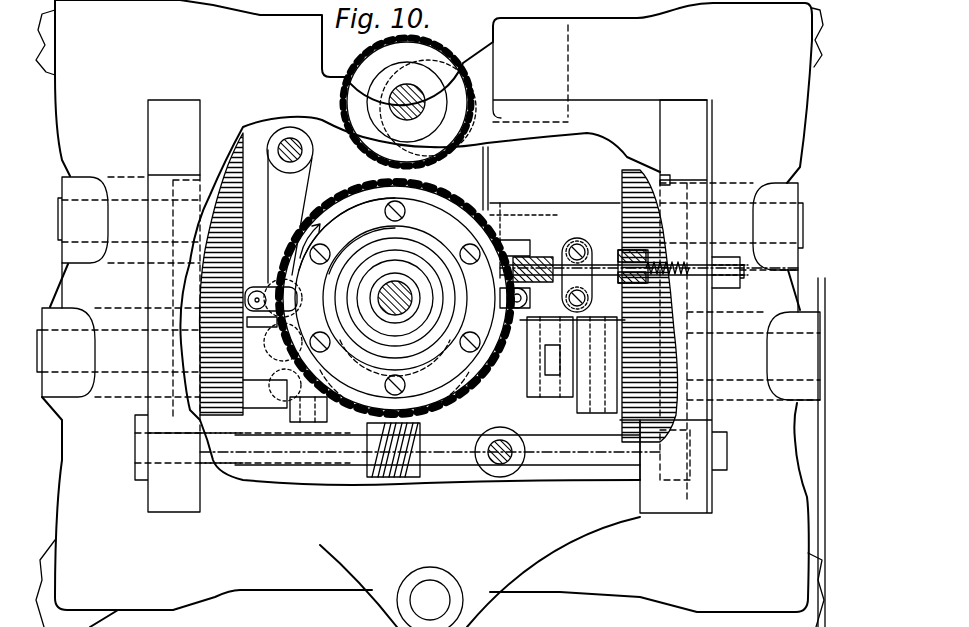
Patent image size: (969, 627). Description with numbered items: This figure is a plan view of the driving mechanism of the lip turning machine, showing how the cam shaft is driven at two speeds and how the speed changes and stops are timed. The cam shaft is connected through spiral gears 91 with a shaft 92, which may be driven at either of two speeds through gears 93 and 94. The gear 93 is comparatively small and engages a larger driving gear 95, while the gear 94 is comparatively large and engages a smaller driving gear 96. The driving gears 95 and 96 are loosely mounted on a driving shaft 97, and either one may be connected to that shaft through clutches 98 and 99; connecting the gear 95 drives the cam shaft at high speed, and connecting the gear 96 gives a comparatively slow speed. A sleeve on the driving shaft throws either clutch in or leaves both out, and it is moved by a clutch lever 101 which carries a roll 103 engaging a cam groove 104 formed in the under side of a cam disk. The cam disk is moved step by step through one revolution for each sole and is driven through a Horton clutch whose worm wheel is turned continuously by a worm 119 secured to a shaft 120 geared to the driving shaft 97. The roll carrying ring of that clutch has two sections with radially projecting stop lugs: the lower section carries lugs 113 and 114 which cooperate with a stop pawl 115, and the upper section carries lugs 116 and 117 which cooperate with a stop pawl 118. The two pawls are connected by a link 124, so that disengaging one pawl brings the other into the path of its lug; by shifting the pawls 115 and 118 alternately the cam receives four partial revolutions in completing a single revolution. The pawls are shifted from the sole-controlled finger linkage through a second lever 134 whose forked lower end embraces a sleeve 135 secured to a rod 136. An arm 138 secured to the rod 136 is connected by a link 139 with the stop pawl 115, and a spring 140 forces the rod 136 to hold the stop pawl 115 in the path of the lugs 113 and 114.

The spiral gears 91 is at (445, 62).
The shaft 92 is at (552, 212).
The gear 93 is at (630, 170).
The gear 94 is at (248, 133).
The driving gear 95 is at (636, 427).
The driving gear 96 is at (230, 408).
The driving shaft 97 is at (42, 398).
The clutch 98 is at (587, 422).
The clutch 99 is at (257, 393).
The clutch lever 101 is at (478, 183).
The roll 103 is at (506, 213).
The cam groove 104 is at (500, 195).
The stop lug 113 is at (512, 248).
The stop lug 114 is at (268, 280).
The stop pawl 115 is at (542, 462).
The stop lug 116 is at (358, 425).
The stop lug 117 is at (362, 185).
The stop pawl 118 is at (290, 205).
The worm 119 is at (402, 479).
The shaft 120 is at (448, 462).
The link 124 is at (268, 380).
The second lever 134 is at (668, 327).
The sleeve 135 is at (665, 255).
The rod 136 is at (743, 277).
The arm 138 is at (588, 270).
The link 139 is at (564, 243).
The spring 140 is at (670, 260).